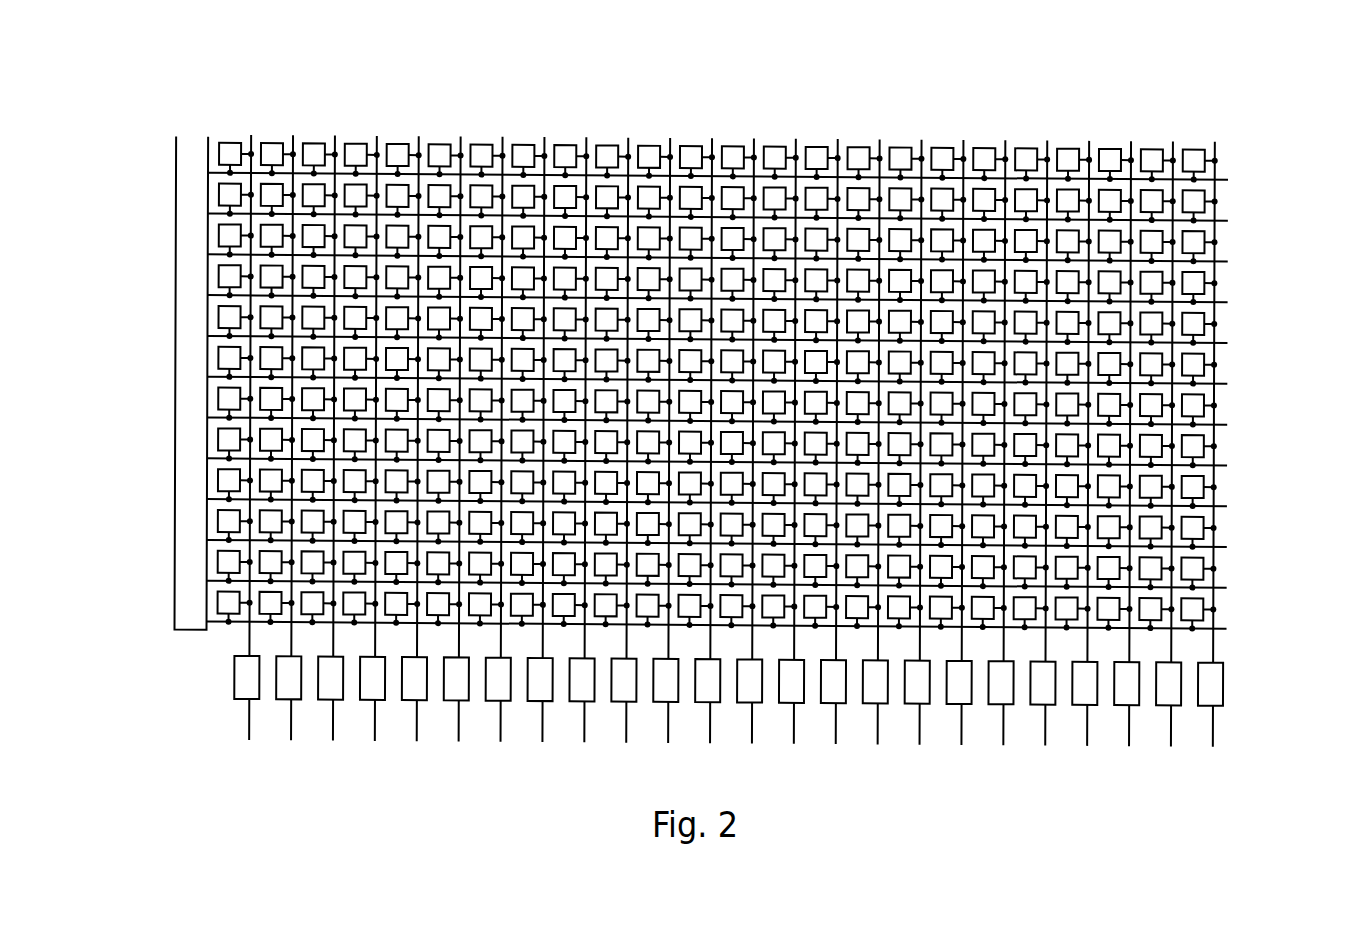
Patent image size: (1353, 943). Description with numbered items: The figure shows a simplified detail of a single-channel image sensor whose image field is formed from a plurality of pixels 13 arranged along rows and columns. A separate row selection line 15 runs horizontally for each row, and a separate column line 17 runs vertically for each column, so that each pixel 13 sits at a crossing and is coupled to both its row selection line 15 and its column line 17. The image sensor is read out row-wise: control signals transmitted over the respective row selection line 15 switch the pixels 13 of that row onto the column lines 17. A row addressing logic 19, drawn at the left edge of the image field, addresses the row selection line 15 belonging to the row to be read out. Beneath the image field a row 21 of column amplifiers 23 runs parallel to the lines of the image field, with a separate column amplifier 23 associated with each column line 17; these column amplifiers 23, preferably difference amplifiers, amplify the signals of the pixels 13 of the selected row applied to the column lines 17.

The pixel 13 is at (230, 149).
The row selection line 15 is at (1222, 181).
The column line 17 is at (841, 137).
The row addressing logic 19 is at (176, 217).
The row of column amplifiers 21 is at (748, 736).
The column amplifier 23 is at (245, 682).